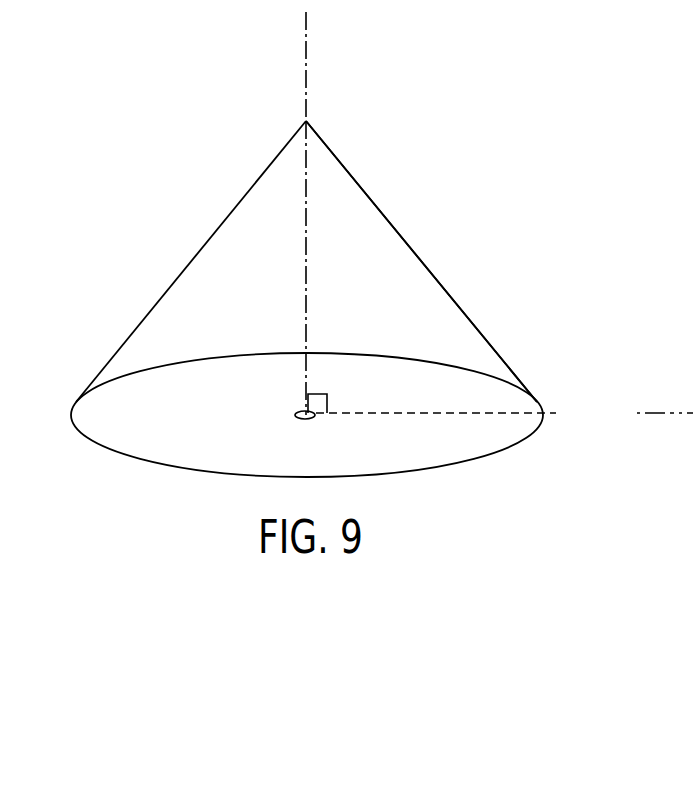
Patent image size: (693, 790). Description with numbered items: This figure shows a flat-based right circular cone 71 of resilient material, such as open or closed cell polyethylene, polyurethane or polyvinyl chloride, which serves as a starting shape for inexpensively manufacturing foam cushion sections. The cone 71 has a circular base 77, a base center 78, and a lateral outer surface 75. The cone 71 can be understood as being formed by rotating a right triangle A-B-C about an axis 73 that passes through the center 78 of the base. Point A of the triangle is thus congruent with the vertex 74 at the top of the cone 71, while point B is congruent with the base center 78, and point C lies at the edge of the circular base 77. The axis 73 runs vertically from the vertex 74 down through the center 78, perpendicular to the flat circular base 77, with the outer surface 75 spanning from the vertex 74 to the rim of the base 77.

The cone 71 is at (222, 190).
The axis 73 is at (309, 59).
The vertex 74 is at (308, 120).
The outer surface 75 is at (418, 253).
The circular base 77 is at (147, 428).
The center 78 is at (316, 419).